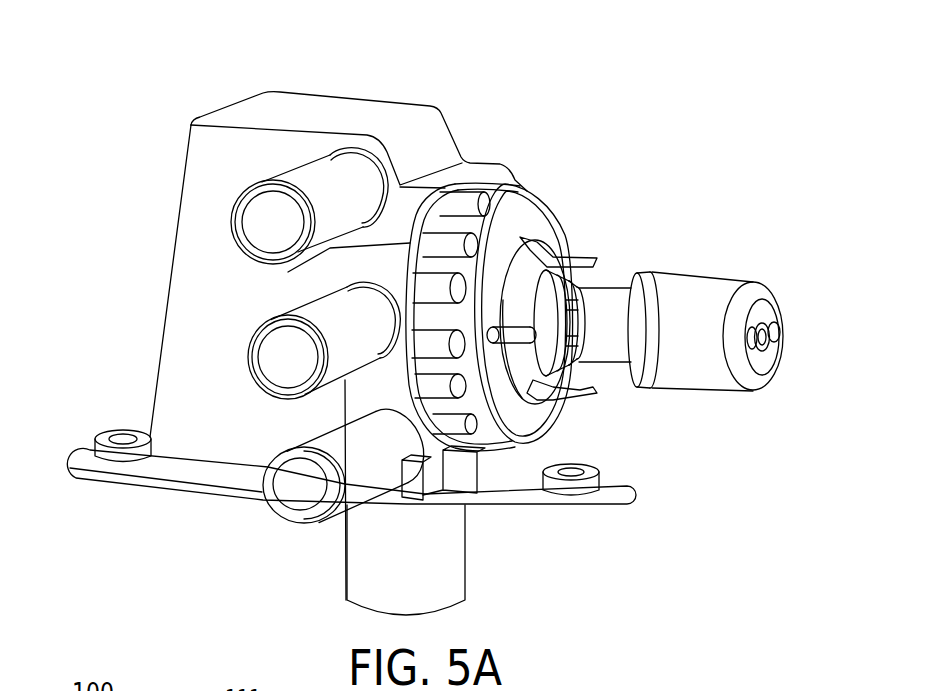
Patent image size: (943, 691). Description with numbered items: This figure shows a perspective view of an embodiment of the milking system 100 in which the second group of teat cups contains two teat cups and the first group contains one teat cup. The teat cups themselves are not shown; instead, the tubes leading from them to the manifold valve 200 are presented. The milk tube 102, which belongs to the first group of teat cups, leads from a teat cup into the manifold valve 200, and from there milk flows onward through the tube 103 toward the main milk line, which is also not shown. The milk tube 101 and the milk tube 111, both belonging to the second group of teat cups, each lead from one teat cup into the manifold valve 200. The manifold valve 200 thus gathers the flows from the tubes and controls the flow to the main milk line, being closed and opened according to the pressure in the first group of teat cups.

The system 100 is at (127, 103).
The milk tube 101 is at (318, 320).
The milk tube 102 is at (361, 478).
The tube 103 is at (453, 556).
The milk tube 111 is at (322, 182).
The manifold valve 200 is at (630, 148).